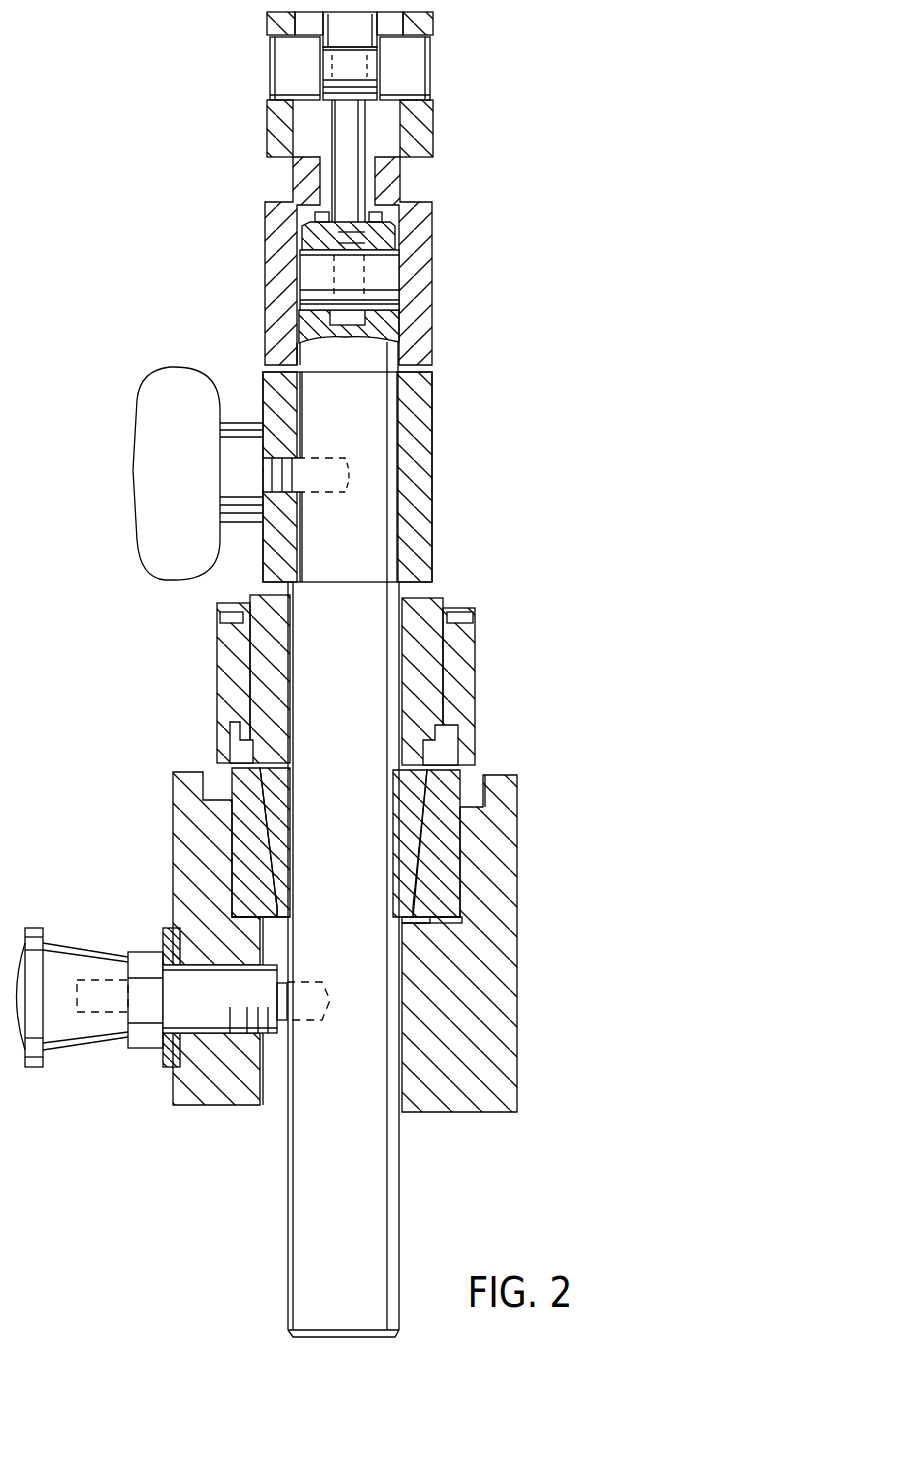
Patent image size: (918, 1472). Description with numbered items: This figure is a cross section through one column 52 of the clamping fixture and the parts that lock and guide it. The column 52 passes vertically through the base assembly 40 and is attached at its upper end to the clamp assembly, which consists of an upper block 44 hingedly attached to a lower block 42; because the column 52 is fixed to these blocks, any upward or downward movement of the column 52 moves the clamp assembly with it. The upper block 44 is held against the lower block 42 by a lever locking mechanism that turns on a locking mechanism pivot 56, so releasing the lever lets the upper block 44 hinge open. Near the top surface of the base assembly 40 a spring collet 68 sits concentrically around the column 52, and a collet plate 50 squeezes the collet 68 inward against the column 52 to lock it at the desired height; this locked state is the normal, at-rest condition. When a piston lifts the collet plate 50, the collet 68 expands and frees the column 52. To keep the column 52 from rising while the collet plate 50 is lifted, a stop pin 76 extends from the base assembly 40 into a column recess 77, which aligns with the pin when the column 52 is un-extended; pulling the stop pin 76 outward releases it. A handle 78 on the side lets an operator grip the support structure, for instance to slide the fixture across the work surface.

The base assembly 40 is at (515, 882).
The lower block 42 is at (432, 436).
The upper block 44 is at (433, 253).
The collet plate 50 is at (473, 648).
The column 52 is at (377, 1178).
The locking mechanism pivot 56 is at (315, 273).
The spring collet 68 is at (413, 728).
The stop pin 76 is at (28, 928).
The column recess 77 is at (322, 1012).
The clamping fixture handle 78 is at (137, 413).